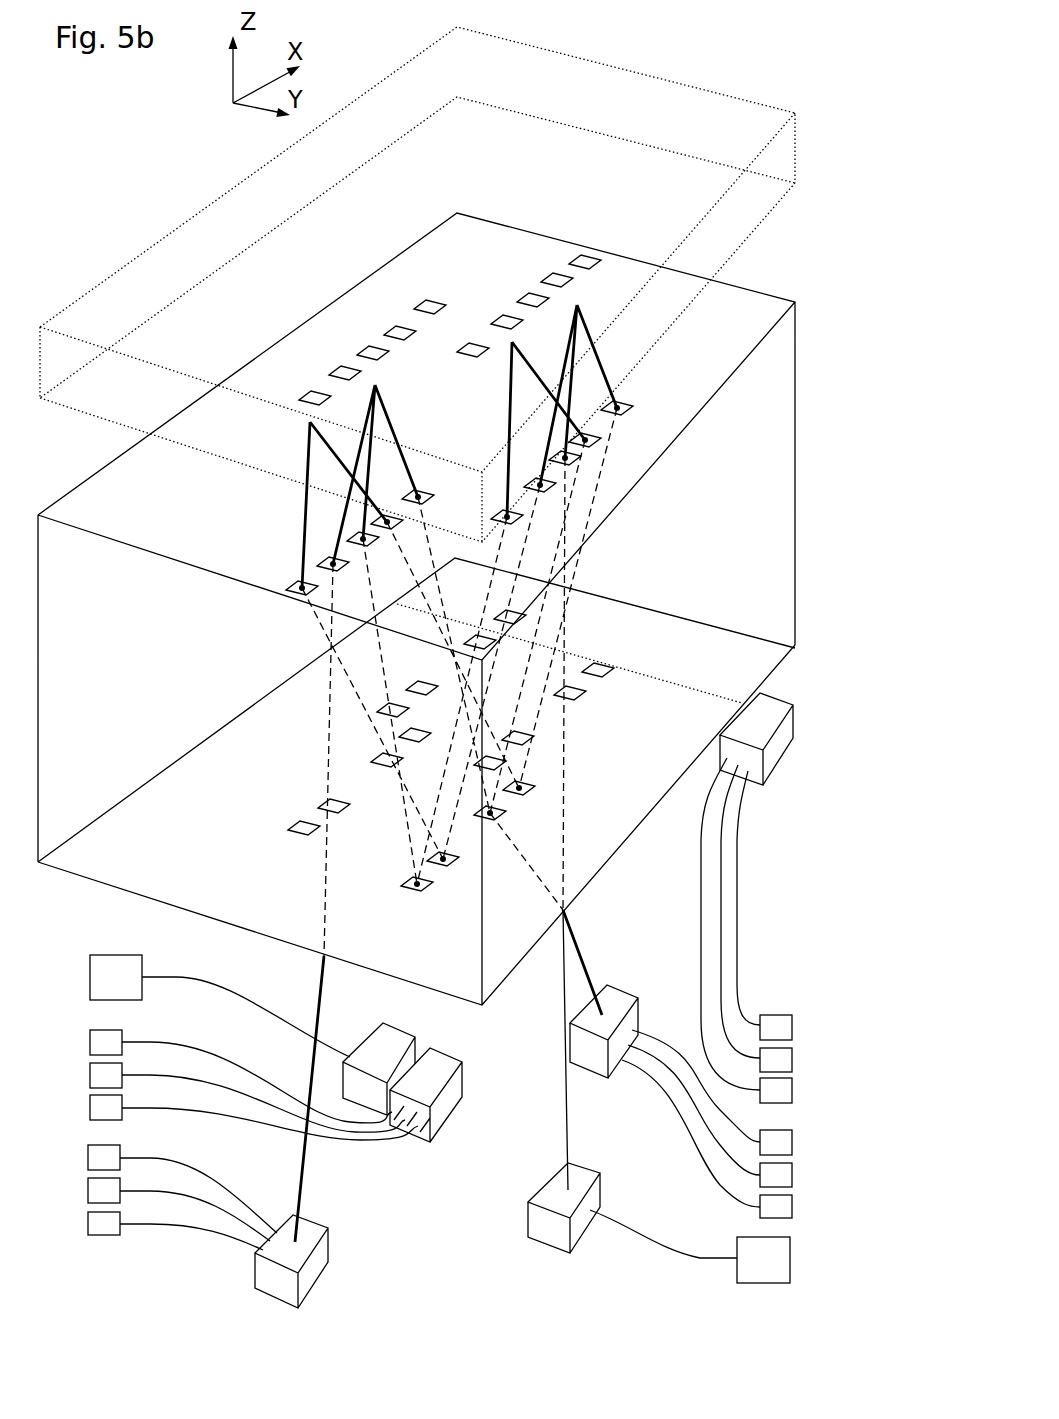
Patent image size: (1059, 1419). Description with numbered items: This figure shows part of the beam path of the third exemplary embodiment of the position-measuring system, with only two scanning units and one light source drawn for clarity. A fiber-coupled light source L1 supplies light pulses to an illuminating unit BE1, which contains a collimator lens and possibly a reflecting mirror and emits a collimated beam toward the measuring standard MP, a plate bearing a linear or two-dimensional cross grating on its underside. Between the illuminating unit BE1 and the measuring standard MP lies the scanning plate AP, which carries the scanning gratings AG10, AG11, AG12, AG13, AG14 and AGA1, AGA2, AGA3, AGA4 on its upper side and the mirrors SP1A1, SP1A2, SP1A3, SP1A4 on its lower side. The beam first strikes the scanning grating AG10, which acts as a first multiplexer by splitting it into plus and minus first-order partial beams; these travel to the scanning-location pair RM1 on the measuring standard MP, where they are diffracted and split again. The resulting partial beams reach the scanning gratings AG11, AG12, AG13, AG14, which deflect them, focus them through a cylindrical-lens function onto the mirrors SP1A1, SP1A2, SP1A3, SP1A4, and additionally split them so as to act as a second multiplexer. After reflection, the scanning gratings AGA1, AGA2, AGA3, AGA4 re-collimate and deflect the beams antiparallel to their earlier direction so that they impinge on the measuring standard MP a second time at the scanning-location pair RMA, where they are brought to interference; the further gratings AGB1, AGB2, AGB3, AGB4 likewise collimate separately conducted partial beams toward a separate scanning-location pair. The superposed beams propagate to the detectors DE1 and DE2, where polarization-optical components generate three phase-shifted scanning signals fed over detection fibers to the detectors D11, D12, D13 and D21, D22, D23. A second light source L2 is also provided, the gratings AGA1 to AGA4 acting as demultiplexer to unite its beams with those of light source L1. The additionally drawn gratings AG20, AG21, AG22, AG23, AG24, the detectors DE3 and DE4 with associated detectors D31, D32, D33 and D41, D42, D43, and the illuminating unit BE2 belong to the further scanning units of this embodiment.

The measuring standard MP is at (429, 284).
The scanning plate AP is at (435, 609).
The scanning-location pair RMA is at (300, 418).
The scanning-location pair RM1 is at (590, 309).
The alignment grating 21 AG21 is at (297, 386).
The alignment grating 22 AG22 is at (324, 366).
The alignment grating 20 AG20 is at (356, 343).
The alignment grating 23 AG23 is at (377, 321).
The alignment grating 24 AG24 is at (409, 298).
The scanning grating AGB1 is at (455, 343).
The scanning grating AGB2 is at (483, 313).
The scanning grating AGB3 is at (540, 273).
The scanning grating AGB4 is at (567, 252).
The scanning grating AGA1 is at (283, 580).
The scanning grating AGA2 is at (315, 555).
The scanning grating AGA3 is at (367, 513).
The scanning grating AGA4 is at (395, 490).
The scanning grating AG10 is at (589, 466).
The scanning grating AG11 is at (522, 525).
The scanning grating AG12 is at (557, 493).
The scanning grating AG13 is at (605, 445).
The scanning grating AG14 is at (635, 412).
The mirror SP1A1 is at (398, 885).
The mirror SP1A2 is at (418, 860).
The mirror SP1A3 is at (522, 818).
The mirror SP1A4 is at (540, 792).
The detector DE1 is at (320, 1261).
The detector DE2 is at (610, 1008).
The detector 3 DE3 is at (448, 1097).
The detector 4 DE4 is at (779, 739).
The illuminating unit BE1 is at (562, 1227).
The illumination unit 2 BE2 is at (372, 1057).
The light source L1 is at (710, 1247).
The light source L2 is at (201, 1006).
The detector D11 is at (155, 1229).
The detector D12 is at (158, 1208).
The detector D13 is at (162, 1188).
The detector D21 is at (732, 1143).
The detector D22 is at (735, 1120).
The detector D23 is at (737, 1096).
The detector element 31 D31 is at (232, 1114).
The detector element 32 D32 is at (226, 1094).
The detector element 33 D33 is at (219, 1073).
The detector element 41 D41 is at (771, 935).
The detector element 42 D42 is at (781, 923).
The detector element 43 D43 is at (789, 911).